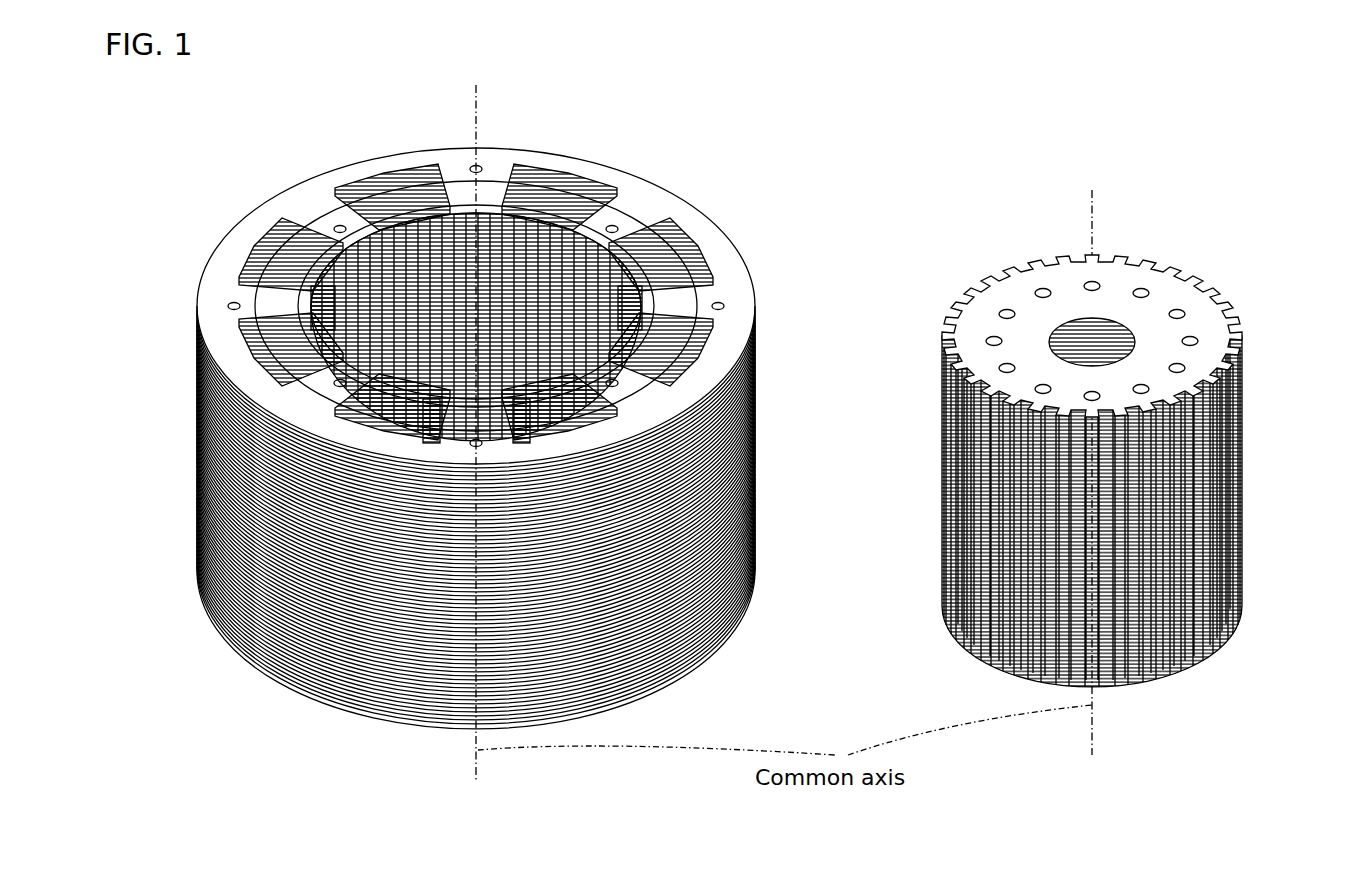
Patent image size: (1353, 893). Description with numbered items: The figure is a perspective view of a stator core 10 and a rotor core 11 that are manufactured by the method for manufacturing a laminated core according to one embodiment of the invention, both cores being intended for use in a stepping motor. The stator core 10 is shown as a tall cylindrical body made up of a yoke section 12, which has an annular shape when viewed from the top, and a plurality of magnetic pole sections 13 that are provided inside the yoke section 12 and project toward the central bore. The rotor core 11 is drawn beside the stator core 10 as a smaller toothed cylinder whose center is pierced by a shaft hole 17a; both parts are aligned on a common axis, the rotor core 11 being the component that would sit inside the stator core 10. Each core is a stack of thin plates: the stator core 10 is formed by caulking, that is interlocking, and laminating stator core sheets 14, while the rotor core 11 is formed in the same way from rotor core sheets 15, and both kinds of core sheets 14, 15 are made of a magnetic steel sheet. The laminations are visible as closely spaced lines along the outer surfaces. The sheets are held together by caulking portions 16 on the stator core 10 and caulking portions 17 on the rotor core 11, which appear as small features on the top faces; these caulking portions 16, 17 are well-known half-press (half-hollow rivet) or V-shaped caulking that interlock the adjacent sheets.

The stator core 10 is at (480, 429).
The rotor core 11 is at (1130, 462).
The yoke section 12 is at (474, 163).
The magnetic pole sections 13 is at (283, 300).
The stator core sheets 14 is at (492, 152).
The rotor core sheets 15 is at (1185, 300).
The caulking portions 16 is at (344, 224).
The caulking portions 17 is at (1105, 398).
The shaft hole 17a is at (1125, 325).